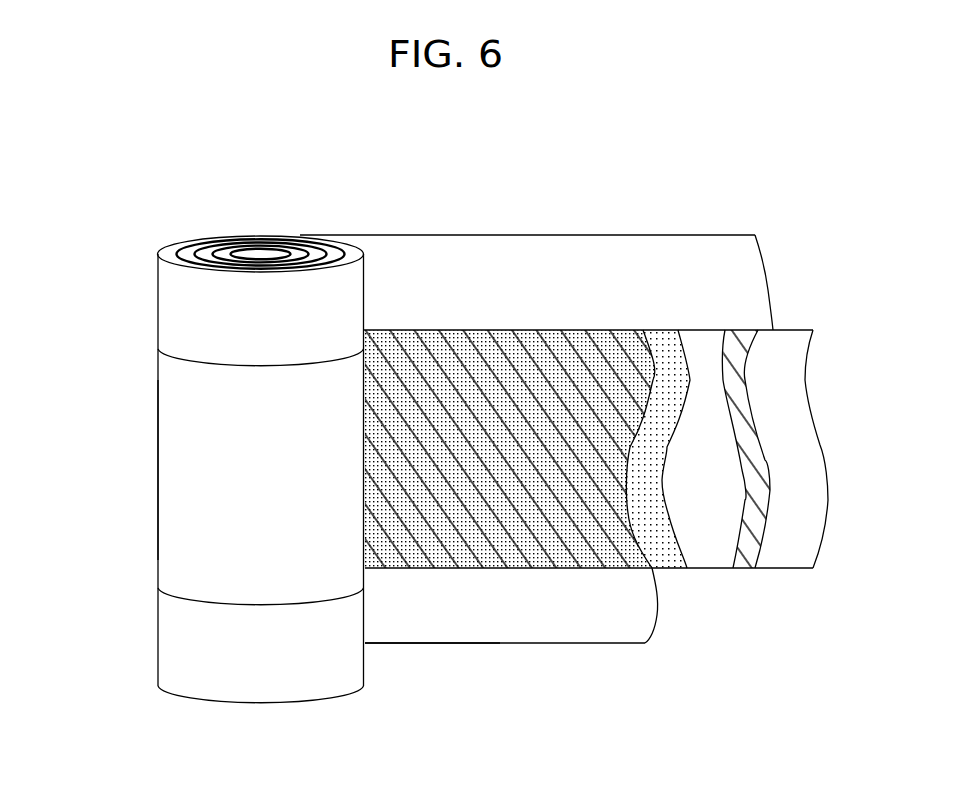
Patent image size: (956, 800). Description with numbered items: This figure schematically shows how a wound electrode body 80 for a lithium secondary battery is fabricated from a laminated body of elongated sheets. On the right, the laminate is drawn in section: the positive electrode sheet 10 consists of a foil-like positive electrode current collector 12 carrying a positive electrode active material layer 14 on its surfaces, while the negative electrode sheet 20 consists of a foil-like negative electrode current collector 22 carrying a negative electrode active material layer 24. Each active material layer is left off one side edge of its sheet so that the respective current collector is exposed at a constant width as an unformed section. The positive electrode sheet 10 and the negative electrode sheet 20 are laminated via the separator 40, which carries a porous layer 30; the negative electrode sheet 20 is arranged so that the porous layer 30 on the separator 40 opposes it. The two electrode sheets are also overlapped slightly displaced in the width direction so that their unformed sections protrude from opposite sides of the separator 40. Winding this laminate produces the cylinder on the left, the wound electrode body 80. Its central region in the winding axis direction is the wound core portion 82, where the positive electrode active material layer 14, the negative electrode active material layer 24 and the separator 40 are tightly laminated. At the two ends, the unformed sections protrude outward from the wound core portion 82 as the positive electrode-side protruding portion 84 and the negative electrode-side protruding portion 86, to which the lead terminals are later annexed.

The positive electrode sheet 10 is at (564, 440).
The positive electrode current collector 12 is at (721, 249).
The positive electrode active material layer 14 is at (742, 338).
The negative electrode sheet 20 is at (406, 646).
The negative electrode current collector 22 is at (486, 626).
The negative electrode active material layer 24 is at (595, 553).
The porous layer 30 is at (663, 342).
The separator 40 is at (705, 543).
The wound electrode body 80 is at (158, 216).
The wound core portion 82 is at (173, 487).
The positive electrode-side protruding portion 84 is at (173, 330).
The negative electrode-side protruding portion 86 is at (173, 640).